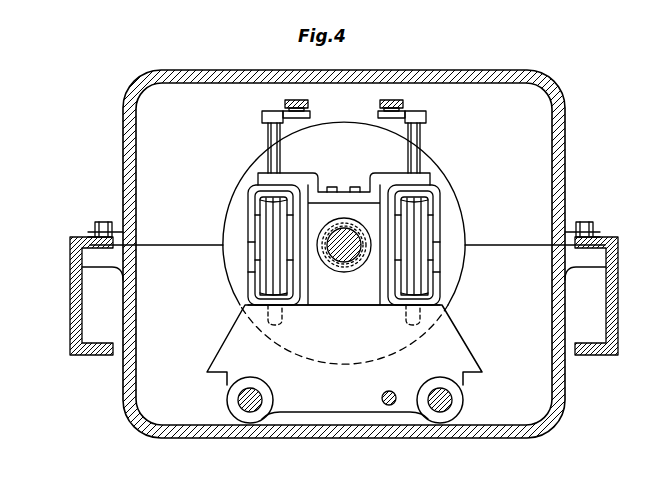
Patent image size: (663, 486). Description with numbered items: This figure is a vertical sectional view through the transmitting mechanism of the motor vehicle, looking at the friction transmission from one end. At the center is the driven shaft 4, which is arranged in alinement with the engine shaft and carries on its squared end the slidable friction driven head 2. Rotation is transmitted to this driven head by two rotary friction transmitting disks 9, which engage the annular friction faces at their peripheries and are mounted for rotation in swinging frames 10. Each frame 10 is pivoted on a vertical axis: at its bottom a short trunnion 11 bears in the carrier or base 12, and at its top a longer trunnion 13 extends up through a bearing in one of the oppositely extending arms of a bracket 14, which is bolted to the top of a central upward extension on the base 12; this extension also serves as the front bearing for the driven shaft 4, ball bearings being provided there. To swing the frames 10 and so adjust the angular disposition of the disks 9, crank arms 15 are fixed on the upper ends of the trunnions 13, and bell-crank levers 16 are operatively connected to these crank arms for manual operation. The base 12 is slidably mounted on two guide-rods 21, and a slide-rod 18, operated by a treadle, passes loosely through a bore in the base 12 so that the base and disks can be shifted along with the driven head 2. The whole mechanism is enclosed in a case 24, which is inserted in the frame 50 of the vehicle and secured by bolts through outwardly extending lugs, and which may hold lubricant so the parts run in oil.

The friction driven head 2 is at (452, 216).
The driven shaft 4 is at (343, 272).
The rotary friction transmitting disks 9 is at (265, 268).
The swinging frames 10 is at (257, 224).
The short trunnion 11 is at (262, 318).
The carrier or base 12 is at (462, 349).
The longer trunnions 13 is at (270, 140).
The bracket 14 is at (427, 179).
The crank arms 15 is at (298, 120).
The bell-crank levers 16 is at (306, 103).
The slide-rod 18 is at (388, 405).
The guide-rods 21 is at (250, 412).
The case 24 is at (567, 396).
The frame 50 is at (70, 300).